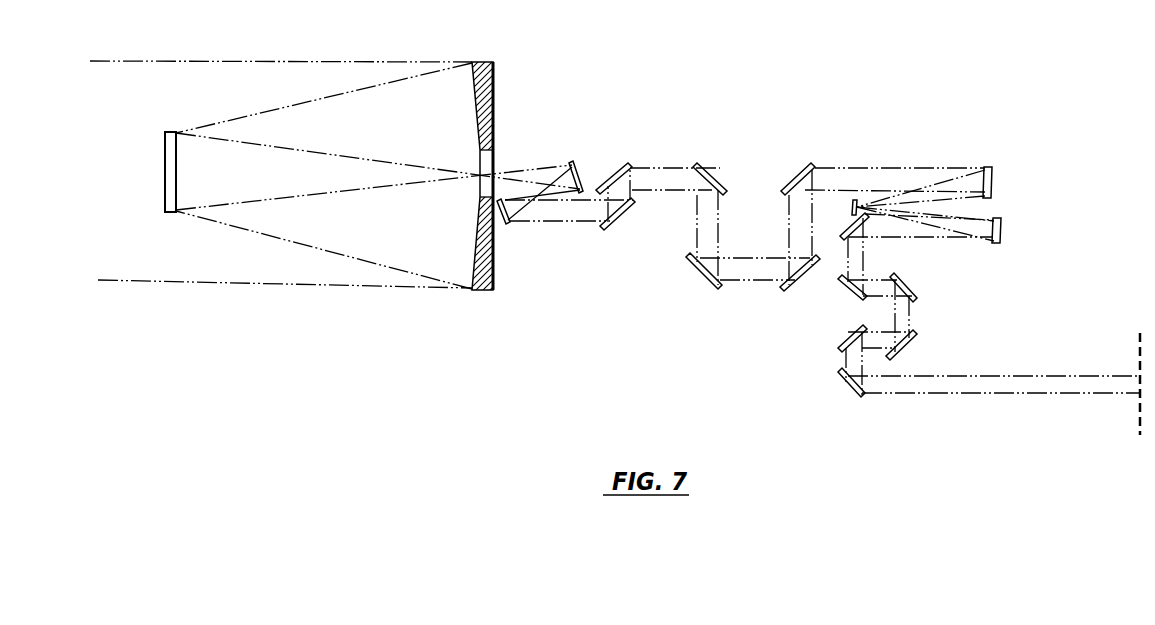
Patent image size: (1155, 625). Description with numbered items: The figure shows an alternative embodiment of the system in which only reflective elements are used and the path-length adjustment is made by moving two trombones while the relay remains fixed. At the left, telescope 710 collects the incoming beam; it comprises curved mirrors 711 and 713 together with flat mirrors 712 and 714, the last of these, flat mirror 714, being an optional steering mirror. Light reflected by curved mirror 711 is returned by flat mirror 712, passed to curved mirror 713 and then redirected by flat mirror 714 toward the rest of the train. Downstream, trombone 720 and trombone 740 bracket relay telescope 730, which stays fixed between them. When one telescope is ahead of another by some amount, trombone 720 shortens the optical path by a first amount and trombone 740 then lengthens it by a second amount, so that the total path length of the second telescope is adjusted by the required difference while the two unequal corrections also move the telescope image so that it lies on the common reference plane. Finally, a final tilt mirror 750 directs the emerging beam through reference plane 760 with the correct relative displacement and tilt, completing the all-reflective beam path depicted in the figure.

The telescope 710 is at (237, 343).
The curved mirror 711 is at (493, 44).
The flat mirror 712 is at (171, 132).
The curved mirror 713 is at (580, 146).
The flat mirror 714 is at (508, 224).
The trombone 720 is at (712, 302).
The relay telescope 730 is at (997, 163).
The trombone 740 is at (929, 307).
The final tilt mirror 750 is at (847, 387).
The reference plane 760 is at (1140, 360).